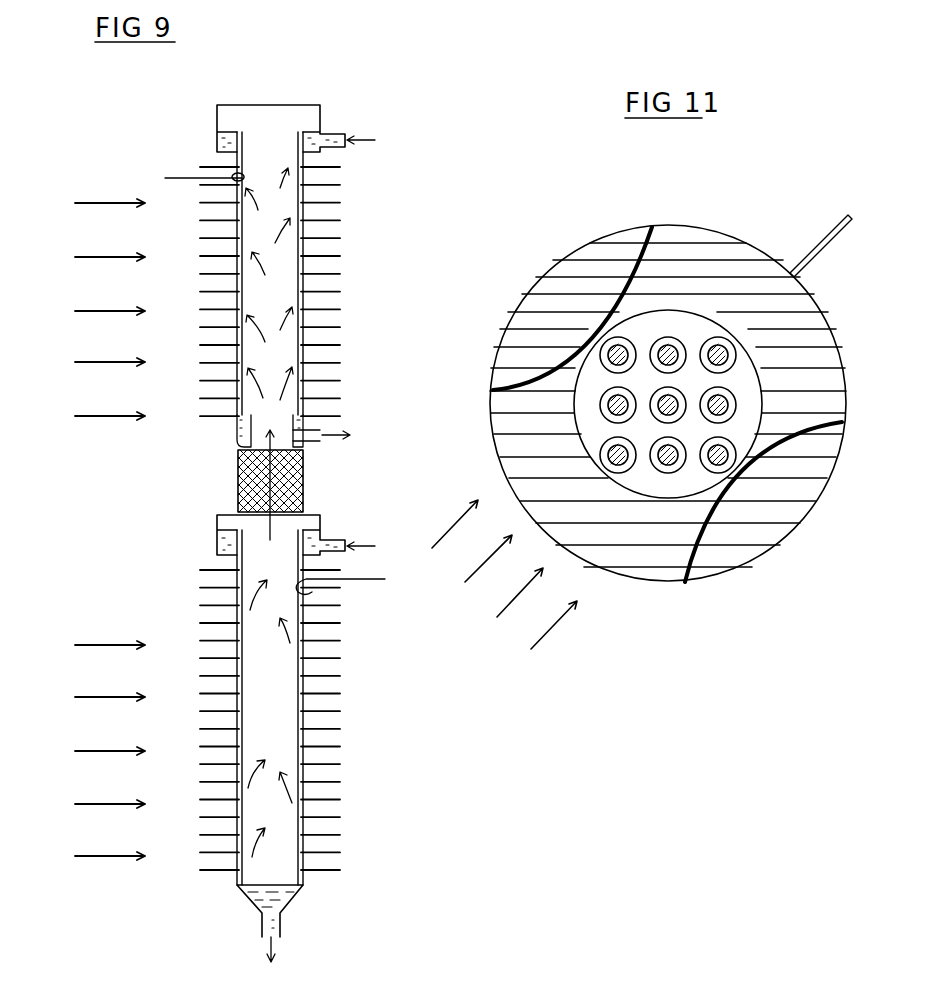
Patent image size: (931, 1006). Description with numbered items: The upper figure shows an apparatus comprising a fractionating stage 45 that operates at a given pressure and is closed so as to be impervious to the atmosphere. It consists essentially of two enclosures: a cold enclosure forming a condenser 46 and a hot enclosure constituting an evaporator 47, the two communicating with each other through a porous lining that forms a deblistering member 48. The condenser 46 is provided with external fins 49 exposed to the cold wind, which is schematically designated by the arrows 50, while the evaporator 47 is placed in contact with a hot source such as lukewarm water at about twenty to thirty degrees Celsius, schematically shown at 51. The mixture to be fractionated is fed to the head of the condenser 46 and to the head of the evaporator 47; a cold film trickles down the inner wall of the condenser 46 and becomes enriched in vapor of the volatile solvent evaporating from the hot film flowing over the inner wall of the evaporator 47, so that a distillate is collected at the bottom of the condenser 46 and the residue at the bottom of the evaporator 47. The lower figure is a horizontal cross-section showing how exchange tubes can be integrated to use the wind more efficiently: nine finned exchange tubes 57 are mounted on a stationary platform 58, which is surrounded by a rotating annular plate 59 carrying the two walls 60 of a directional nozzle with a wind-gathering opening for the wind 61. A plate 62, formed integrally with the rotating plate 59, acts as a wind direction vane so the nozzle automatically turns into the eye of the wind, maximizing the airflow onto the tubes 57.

In FIG. 9, the fractionating stage 45 is at (368, 380).
In FIG. 9, the condenser 46 is at (287, 256).
In FIG. 9, the evaporator 47 is at (278, 653).
In FIG. 9, the deblistering member 48 is at (303, 497).
In FIG. 9, the external fins 49 is at (205, 203).
In FIG. 9, the arrows (cold wind) 50 is at (124, 312).
In FIG. 9, the hot source (lukewarm water) 51 is at (124, 806).
In FIG. 11, the finned exchange tubes 57 is at (718, 350).
In FIG. 11, the stationary platform 58 is at (646, 488).
In FIG. 11, the rotating annular plate 59 is at (782, 528).
In FIG. 11, the walls of directional nozzle 60 is at (715, 610).
In FIG. 11, the wind 61 is at (548, 633).
In FIG. 11, the plate (wind direction vane) 62 is at (822, 242).